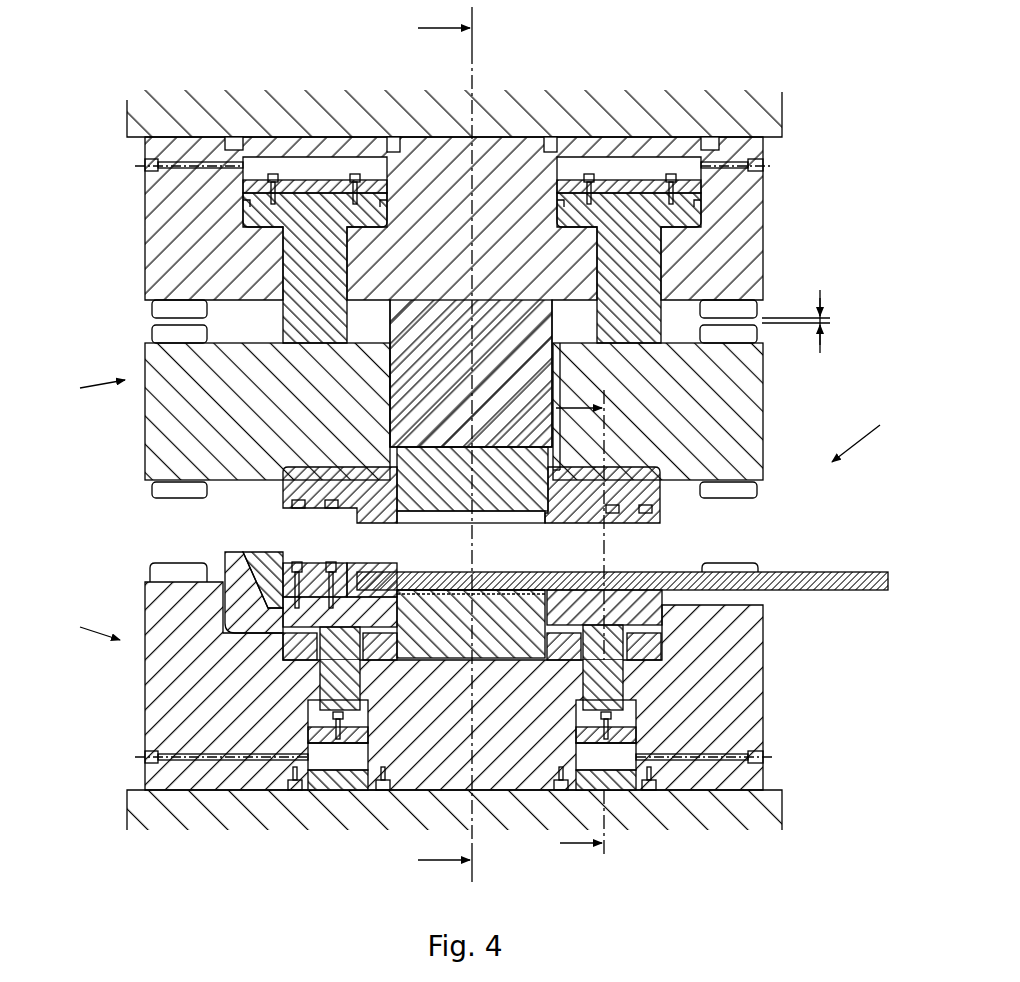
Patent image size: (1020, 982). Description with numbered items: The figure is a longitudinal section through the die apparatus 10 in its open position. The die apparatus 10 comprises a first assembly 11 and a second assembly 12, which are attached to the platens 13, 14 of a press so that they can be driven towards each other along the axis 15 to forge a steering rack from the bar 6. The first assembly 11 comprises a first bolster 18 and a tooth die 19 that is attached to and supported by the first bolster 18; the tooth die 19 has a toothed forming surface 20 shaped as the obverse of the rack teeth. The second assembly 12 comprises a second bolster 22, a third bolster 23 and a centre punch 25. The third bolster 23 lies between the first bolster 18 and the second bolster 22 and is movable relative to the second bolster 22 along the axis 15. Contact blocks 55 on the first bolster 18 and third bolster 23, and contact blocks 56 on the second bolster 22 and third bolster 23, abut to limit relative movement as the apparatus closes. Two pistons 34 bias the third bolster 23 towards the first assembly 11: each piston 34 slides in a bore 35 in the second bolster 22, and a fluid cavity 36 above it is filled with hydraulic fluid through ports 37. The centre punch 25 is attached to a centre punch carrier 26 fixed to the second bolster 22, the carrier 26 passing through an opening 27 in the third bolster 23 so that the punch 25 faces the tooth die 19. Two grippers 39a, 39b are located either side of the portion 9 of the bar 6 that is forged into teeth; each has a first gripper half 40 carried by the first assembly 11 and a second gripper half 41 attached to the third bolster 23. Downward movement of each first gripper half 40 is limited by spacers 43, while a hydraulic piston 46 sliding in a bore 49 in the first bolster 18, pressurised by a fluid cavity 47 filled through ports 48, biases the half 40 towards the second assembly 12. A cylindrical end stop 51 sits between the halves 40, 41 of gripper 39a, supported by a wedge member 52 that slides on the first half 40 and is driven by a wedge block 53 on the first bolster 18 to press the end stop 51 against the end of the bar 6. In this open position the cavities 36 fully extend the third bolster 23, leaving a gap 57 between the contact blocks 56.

The bar 6 is at (822, 572).
The portion of the bar 9 is at (420, 573).
The die apparatus 10 is at (871, 436).
The first assembly 11 is at (83, 627).
The second assembly 12 is at (85, 388).
The platen 13 is at (115, 805).
The platen 14 is at (135, 127).
The axis 15 is at (472, 85).
The first bolster 18 is at (160, 612).
The tooth die 19 is at (518, 605).
The toothed forming surface 20 is at (470, 585).
The second bolster 22 is at (158, 250).
The third bolster 23 is at (160, 430).
The centre punch 25 is at (488, 500).
The centre punch carrier 26 is at (538, 350).
The opening 27 is at (560, 373).
The piston 34 is at (255, 215).
The bore 35 is at (255, 185).
The fluid cavity 36 is at (280, 165).
The port 37 is at (150, 165).
The gripper 39a is at (325, 527).
The gripper 39b is at (660, 542).
The first gripper half 40 is at (367, 577).
The second gripper half 41 is at (347, 495).
The spacer 43 is at (293, 652).
The hydraulic piston 46 is at (325, 690).
The fluid cavity 47 is at (330, 760).
The port 48 is at (150, 758).
The bore 49 is at (320, 732).
The cylindrical end stop 51 is at (352, 565).
The wedge member 52 is at (265, 560).
The wedge block 53 is at (236, 556).
The contact block 55 is at (175, 492).
The contact block 56 is at (165, 308).
The gap 57 is at (822, 293).